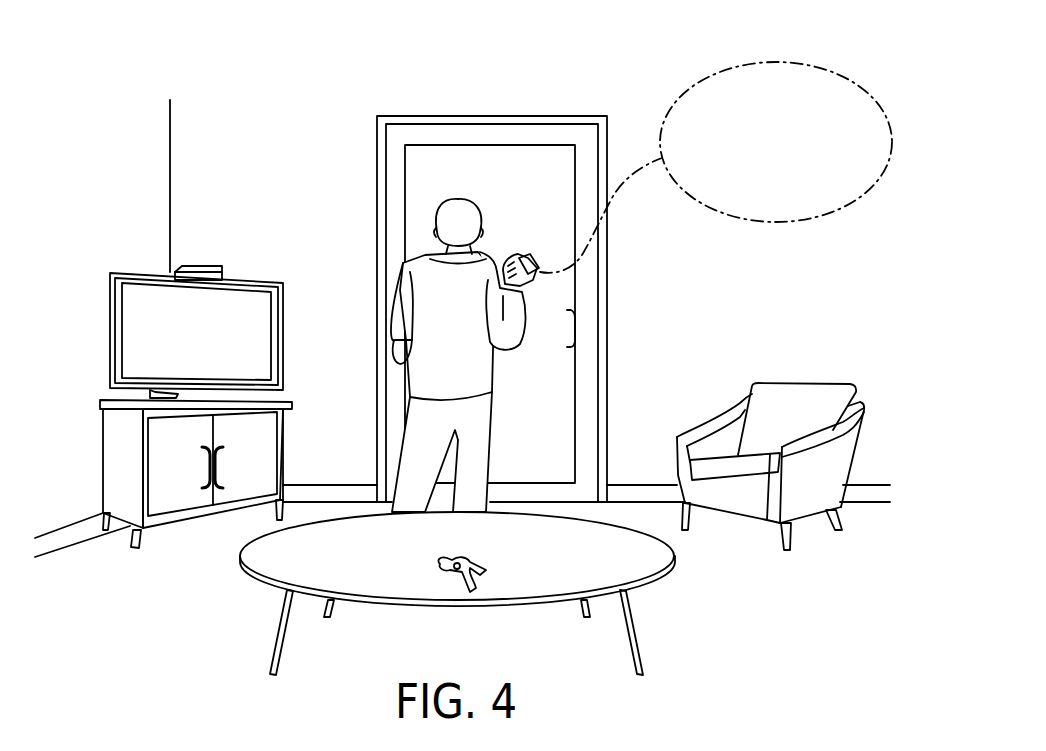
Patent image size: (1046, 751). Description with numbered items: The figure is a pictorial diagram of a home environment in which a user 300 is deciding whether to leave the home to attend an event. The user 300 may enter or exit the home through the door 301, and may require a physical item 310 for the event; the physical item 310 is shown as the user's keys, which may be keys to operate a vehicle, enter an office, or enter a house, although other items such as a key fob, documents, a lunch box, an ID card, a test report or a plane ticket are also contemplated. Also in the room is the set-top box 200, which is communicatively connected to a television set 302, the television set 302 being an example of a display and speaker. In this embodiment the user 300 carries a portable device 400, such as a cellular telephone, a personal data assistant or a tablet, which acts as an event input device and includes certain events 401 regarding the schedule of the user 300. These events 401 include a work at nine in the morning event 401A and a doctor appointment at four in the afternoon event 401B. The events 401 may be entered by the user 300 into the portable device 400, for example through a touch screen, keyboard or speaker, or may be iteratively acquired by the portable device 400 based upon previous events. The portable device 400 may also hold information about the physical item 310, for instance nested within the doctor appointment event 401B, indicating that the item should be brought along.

The set-top box 200 is at (212, 271).
The user 300 is at (498, 270).
The door 301 is at (550, 182).
The television set 302 is at (257, 302).
The physical item 310 is at (457, 585).
The portable device 400 is at (534, 254).
The events 401 is at (716, 155).
The "work at 9 AM" event 401A is at (688, 107).
The "doctor appointment at 4 PM" event 401B is at (688, 152).